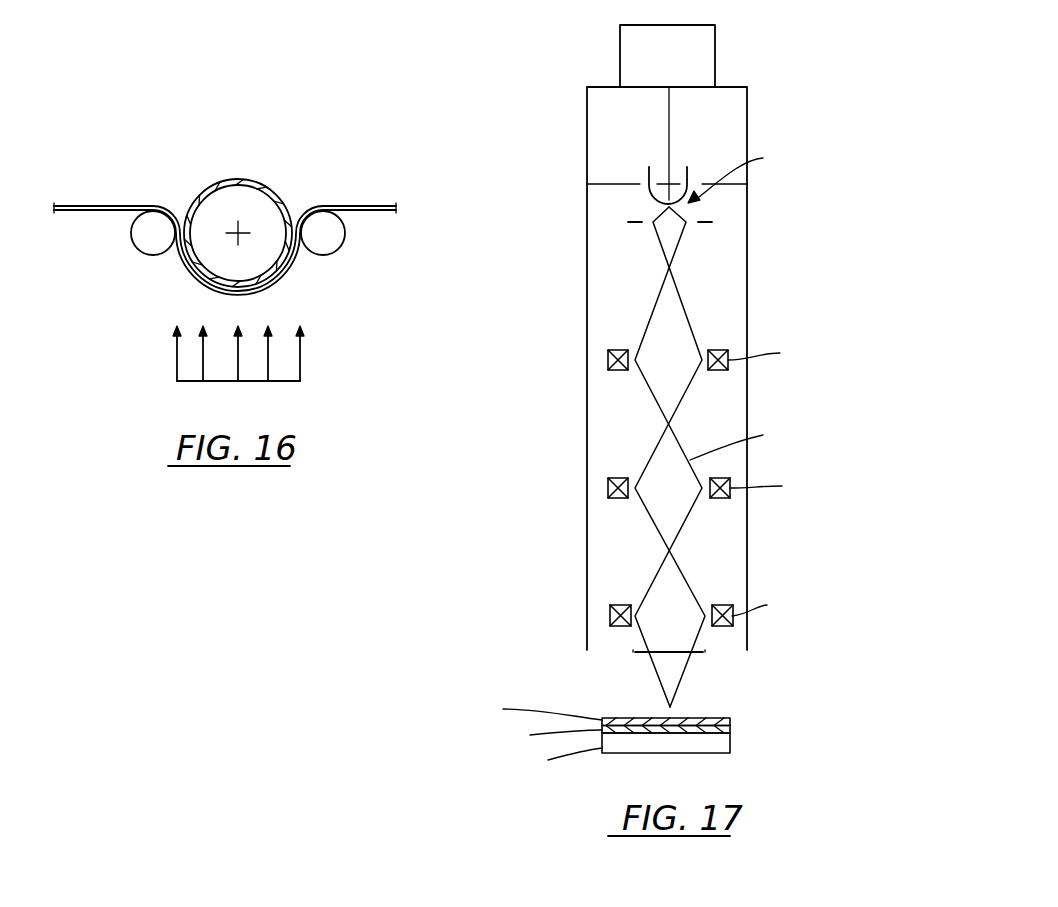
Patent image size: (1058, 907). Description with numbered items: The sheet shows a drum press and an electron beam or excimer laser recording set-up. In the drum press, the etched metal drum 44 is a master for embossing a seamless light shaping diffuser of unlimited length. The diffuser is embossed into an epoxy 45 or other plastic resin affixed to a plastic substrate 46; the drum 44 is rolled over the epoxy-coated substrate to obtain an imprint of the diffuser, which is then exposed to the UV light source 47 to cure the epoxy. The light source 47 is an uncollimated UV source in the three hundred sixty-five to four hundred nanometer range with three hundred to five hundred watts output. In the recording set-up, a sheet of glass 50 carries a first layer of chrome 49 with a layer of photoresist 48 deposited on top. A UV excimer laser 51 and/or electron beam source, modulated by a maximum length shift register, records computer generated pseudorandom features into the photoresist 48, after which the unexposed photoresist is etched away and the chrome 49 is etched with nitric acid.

In FIG. 16, the drum 44 is at (270, 181).
In FIG. 16, the epoxy 45 is at (77, 205).
In FIG. 16, the plastic substrate 46 is at (102, 215).
In FIG. 16, the UV light source 47 is at (272, 381).
In FIG. 17, the photoresist 48 is at (730, 720).
In FIG. 17, the chrome 49 is at (730, 730).
In FIG. 17, the glass 50 is at (730, 745).
In FIG. 17, the UV excimer laser 51 is at (755, 243).